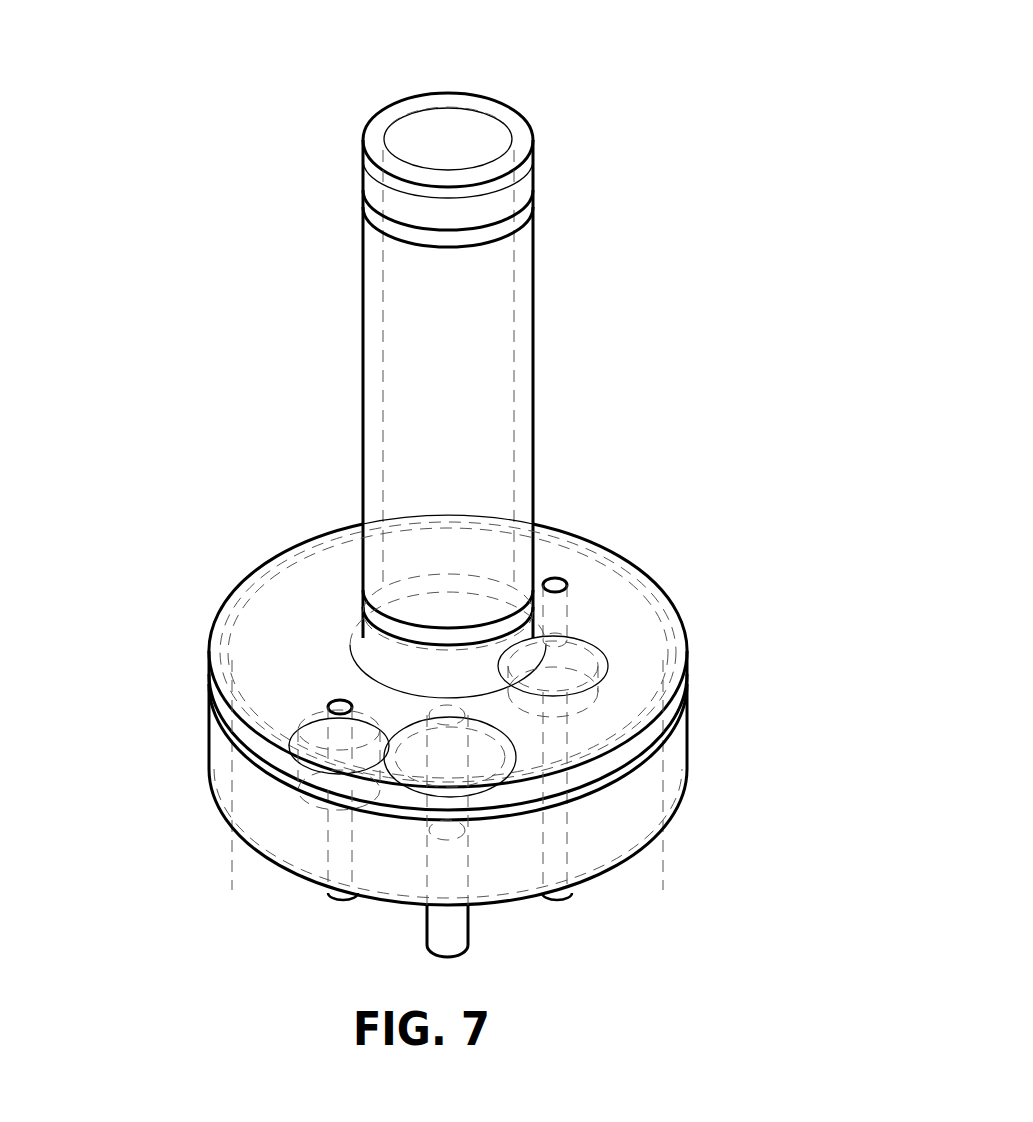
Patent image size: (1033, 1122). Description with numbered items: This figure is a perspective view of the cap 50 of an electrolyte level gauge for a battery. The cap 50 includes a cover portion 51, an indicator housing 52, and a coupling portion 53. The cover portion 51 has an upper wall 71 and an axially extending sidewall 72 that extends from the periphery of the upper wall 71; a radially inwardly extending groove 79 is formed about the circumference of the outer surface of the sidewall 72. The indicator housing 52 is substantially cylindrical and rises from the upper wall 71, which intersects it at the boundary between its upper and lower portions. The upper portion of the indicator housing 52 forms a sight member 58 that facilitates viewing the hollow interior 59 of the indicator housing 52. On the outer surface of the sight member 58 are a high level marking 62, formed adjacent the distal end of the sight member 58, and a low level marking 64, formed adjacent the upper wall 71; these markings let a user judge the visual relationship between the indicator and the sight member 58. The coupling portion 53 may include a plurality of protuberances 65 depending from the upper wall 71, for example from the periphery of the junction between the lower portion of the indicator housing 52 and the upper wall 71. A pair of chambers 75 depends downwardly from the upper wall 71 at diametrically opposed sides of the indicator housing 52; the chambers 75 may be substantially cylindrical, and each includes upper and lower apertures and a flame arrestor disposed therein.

The cap 50 is at (580, 172).
The cover portion 51 is at (629, 628).
The indicator housing 52 is at (533, 423).
The coupling portion 53 is at (375, 935).
The sight member 58 is at (350, 394).
The hollow interior 59 is at (483, 388).
The high level marking 62 is at (363, 207).
The low level marking 64 is at (357, 598).
The protuberances 65 is at (452, 929).
The upper wall 71 is at (317, 645).
The sidewall 72 is at (222, 745).
The chambers 75 is at (582, 615).
The groove 79 is at (688, 712).